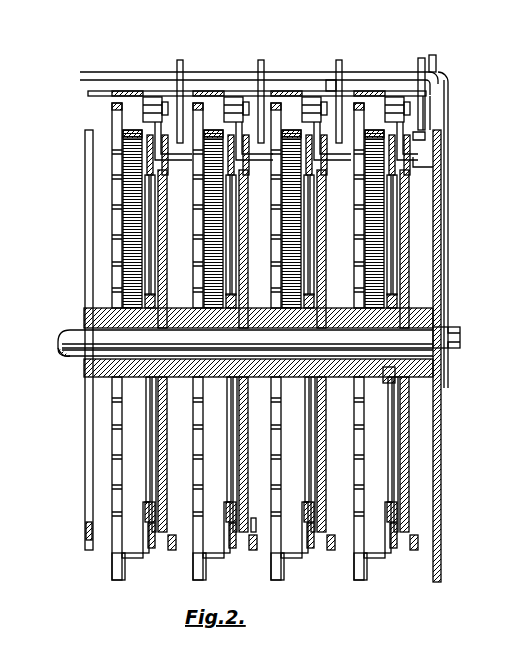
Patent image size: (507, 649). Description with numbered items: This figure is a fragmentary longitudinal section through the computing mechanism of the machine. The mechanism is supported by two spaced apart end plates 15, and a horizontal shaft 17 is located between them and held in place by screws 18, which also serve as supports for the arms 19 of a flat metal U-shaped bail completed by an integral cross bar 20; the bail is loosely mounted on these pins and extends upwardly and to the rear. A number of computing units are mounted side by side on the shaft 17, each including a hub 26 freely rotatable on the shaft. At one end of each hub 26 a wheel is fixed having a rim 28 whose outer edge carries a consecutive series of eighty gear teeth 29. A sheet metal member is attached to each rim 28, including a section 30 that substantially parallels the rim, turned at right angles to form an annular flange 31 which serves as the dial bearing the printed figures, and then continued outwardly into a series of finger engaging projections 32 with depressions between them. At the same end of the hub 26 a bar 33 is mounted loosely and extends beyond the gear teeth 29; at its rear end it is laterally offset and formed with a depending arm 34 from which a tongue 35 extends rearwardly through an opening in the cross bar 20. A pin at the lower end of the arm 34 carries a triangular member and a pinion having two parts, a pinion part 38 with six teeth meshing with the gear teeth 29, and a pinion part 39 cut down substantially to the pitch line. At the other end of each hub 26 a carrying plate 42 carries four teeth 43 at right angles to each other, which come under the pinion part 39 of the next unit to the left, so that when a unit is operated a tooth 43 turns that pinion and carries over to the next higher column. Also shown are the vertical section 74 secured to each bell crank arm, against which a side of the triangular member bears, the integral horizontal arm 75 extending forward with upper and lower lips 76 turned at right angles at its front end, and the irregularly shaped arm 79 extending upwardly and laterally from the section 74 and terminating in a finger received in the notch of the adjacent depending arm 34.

The end plate 15 is at (441, 243).
The horizontal shaft 17 is at (65, 358).
The screw 18 is at (461, 336).
The arm 19 is at (449, 191).
The cross bar 20 is at (106, 72).
The hub 26 is at (385, 383).
The rim 28 is at (148, 522).
The gear teeth 29 is at (152, 550).
The section 30 is at (141, 557).
The flange 31 is at (142, 558).
The projection 32 is at (118, 580).
The bar 33 is at (168, 248).
The depending arm 34 is at (426, 137).
The tongue 35 is at (180, 60).
The pinion part 38 is at (150, 97).
The pinion part 39 is at (328, 97).
The carrying plate 42 is at (86, 506).
The tooth 43 is at (148, 528).
The vertical section 74 is at (331, 80).
The horizontal arm 75 is at (283, 97).
The lip 76 is at (193, 190).
The irregularly shaped arm 79 is at (90, 96).